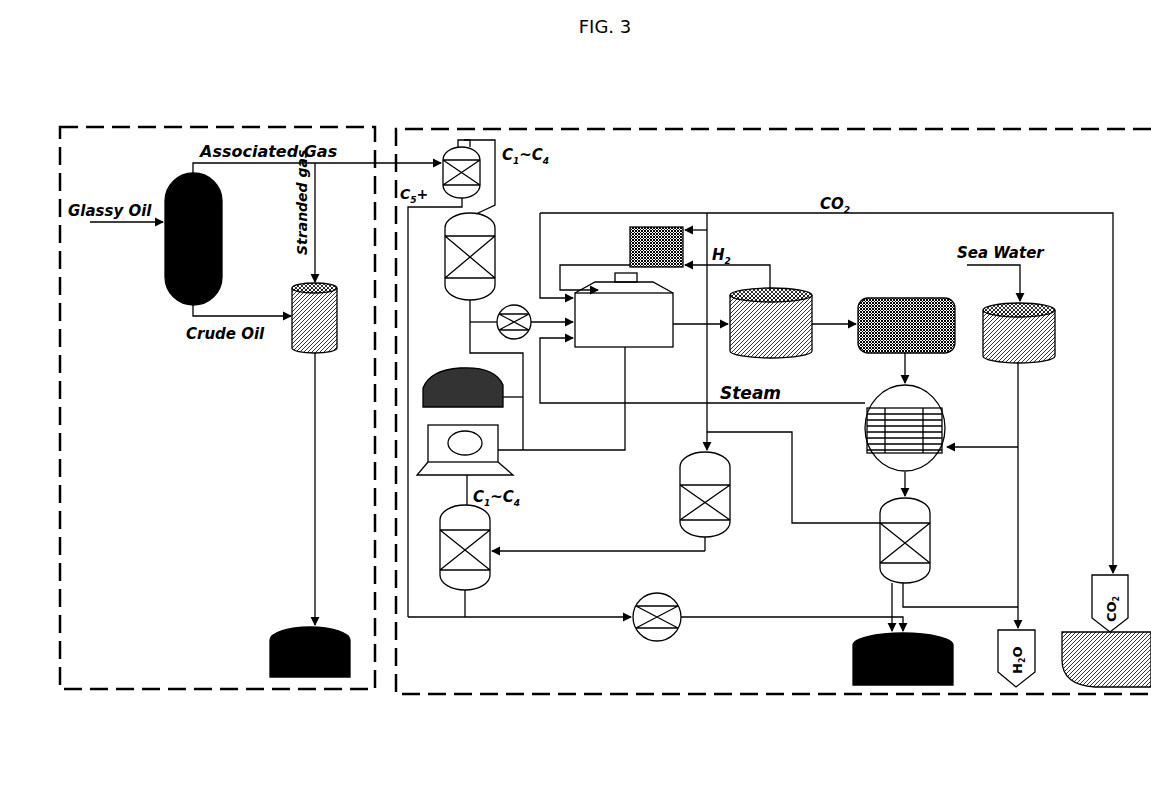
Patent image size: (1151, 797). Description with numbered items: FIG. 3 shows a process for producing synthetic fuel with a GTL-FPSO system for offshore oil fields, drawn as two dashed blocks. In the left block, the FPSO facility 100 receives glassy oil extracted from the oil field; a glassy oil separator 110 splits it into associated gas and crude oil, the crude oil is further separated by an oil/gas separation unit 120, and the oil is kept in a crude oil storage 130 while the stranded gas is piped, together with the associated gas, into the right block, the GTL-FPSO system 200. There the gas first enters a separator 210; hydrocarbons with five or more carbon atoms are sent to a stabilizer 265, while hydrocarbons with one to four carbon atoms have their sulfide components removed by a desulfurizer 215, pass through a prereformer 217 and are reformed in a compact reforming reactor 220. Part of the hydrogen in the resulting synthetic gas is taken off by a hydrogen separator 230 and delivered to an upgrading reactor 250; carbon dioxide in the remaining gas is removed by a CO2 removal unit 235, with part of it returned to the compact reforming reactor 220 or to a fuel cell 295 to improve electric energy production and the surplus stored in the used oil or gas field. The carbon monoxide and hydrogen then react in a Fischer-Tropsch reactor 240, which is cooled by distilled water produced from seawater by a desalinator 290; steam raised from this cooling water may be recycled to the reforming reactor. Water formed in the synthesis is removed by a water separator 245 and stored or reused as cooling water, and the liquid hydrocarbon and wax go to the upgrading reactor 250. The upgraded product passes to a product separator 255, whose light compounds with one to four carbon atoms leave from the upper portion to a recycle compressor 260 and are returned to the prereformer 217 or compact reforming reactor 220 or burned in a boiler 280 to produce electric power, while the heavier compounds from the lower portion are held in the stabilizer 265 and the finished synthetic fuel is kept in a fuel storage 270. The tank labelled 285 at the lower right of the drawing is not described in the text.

The FPSO facility 100 is at (121, 125).
The glassy oil separator 110 is at (190, 173).
The oil/gas separation unit 120 is at (320, 283).
The crude oil storage 130 is at (290, 688).
The GTL-FPSO system 200 is at (792, 126).
The separator 210 is at (462, 140).
The desulfurizer 215 is at (514, 305).
The prereformer 217 is at (540, 213).
The compact reforming reactor 220 is at (620, 273).
The fuel cell 295 is at (655, 227).
The hydrogen separator 230 is at (777, 288).
The CO2 removal unit 235 is at (897, 298).
The Fischer-Tropsch reactor 240 is at (920, 385).
The desalinator 290 is at (1047, 303).
The boiler 280 is at (440, 477).
The recycle compressor 260 is at (423, 392).
The product separator 255 is at (475, 593).
The stabilizer 265 is at (657, 641).
The upgrading reactor 250 is at (717, 537).
The water separator 245 is at (865, 687).
The fuel storage 270 is at (927, 687).
The carbon dioxide storage tank 285 is at (1077, 687).